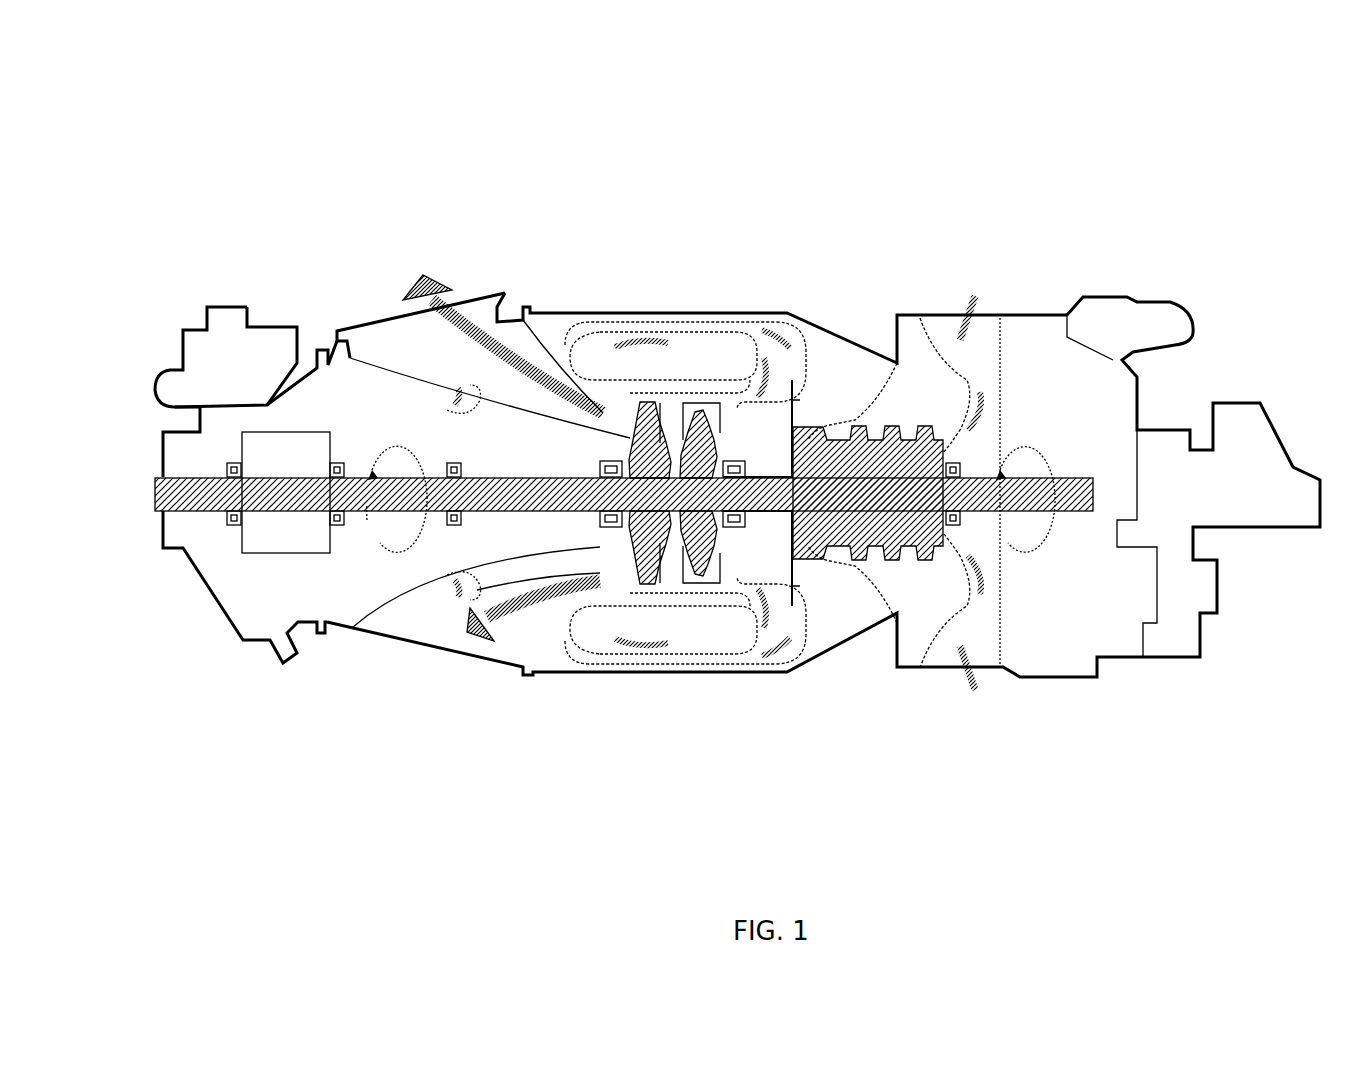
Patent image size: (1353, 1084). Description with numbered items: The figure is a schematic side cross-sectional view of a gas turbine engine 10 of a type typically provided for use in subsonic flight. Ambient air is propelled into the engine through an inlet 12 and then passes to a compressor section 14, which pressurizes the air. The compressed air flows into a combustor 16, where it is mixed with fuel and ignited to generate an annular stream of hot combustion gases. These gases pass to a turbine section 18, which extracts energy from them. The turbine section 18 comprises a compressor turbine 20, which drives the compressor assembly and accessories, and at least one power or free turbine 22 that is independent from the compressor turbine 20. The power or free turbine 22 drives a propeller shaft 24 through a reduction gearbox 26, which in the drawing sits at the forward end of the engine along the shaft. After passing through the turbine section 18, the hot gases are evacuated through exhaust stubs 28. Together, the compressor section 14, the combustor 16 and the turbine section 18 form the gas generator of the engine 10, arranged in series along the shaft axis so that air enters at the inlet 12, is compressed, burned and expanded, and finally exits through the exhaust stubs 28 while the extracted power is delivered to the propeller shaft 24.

The gas turbine engine 10 is at (618, 132).
The inlet 12 is at (997, 282).
The compressor section 14 is at (873, 407).
The combustor 16 is at (686, 341).
The turbine section 18 is at (673, 548).
The compressor turbine 20 is at (703, 556).
The power or free turbine 22 is at (643, 558).
The propeller shaft 24 is at (163, 479).
The reduction gearbox 26 is at (270, 518).
The exhaust stubs 28 is at (358, 282).